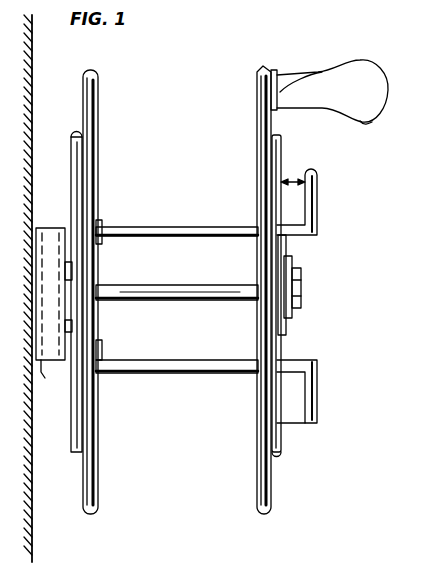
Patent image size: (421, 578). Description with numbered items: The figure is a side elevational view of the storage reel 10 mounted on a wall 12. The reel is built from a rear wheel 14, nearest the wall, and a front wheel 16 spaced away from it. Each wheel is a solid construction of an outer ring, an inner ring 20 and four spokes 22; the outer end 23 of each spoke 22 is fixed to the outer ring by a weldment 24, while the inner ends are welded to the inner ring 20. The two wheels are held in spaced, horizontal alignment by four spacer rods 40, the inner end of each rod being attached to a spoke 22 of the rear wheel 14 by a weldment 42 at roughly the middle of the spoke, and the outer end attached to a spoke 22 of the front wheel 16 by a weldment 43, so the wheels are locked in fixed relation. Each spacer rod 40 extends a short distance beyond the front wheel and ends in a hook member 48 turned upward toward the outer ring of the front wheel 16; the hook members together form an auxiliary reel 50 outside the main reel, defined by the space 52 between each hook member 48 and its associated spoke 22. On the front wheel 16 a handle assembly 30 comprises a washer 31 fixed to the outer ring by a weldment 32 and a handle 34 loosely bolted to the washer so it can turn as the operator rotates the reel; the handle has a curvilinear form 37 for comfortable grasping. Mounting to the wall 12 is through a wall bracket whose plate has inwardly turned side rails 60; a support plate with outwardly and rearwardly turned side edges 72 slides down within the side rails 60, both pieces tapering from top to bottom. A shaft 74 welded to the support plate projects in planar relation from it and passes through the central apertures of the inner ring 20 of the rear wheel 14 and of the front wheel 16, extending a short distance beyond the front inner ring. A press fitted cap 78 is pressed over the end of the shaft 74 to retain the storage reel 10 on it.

The storage reel 10 is at (328, 276).
The wall 12 is at (34, 528).
The rear wheel 14 is at (94, 82).
The front wheel 16 is at (262, 498).
The inner ring 20 is at (72, 275).
The spoke 22 is at (71, 176).
The outer end of spoke 23 is at (78, 134).
The weldment 24 is at (88, 150).
The handle assembly 30 is at (386, 78).
The washer 31 is at (280, 90).
The weldment 32 is at (265, 68).
The handle 34 is at (366, 120).
The curvilinear form 37 is at (322, 78).
The spacer rod 40 is at (192, 225).
The weldment 42 is at (83, 228).
The weldment 43 is at (286, 245).
The hook member 48 is at (320, 200).
The auxiliary reel 50 is at (300, 420).
The space 52 is at (290, 180).
The side rail 60 is at (50, 318).
The side edge of support plate 72 is at (58, 345).
The shaft 74 is at (176, 304).
The press fitted cap 78 is at (302, 305).